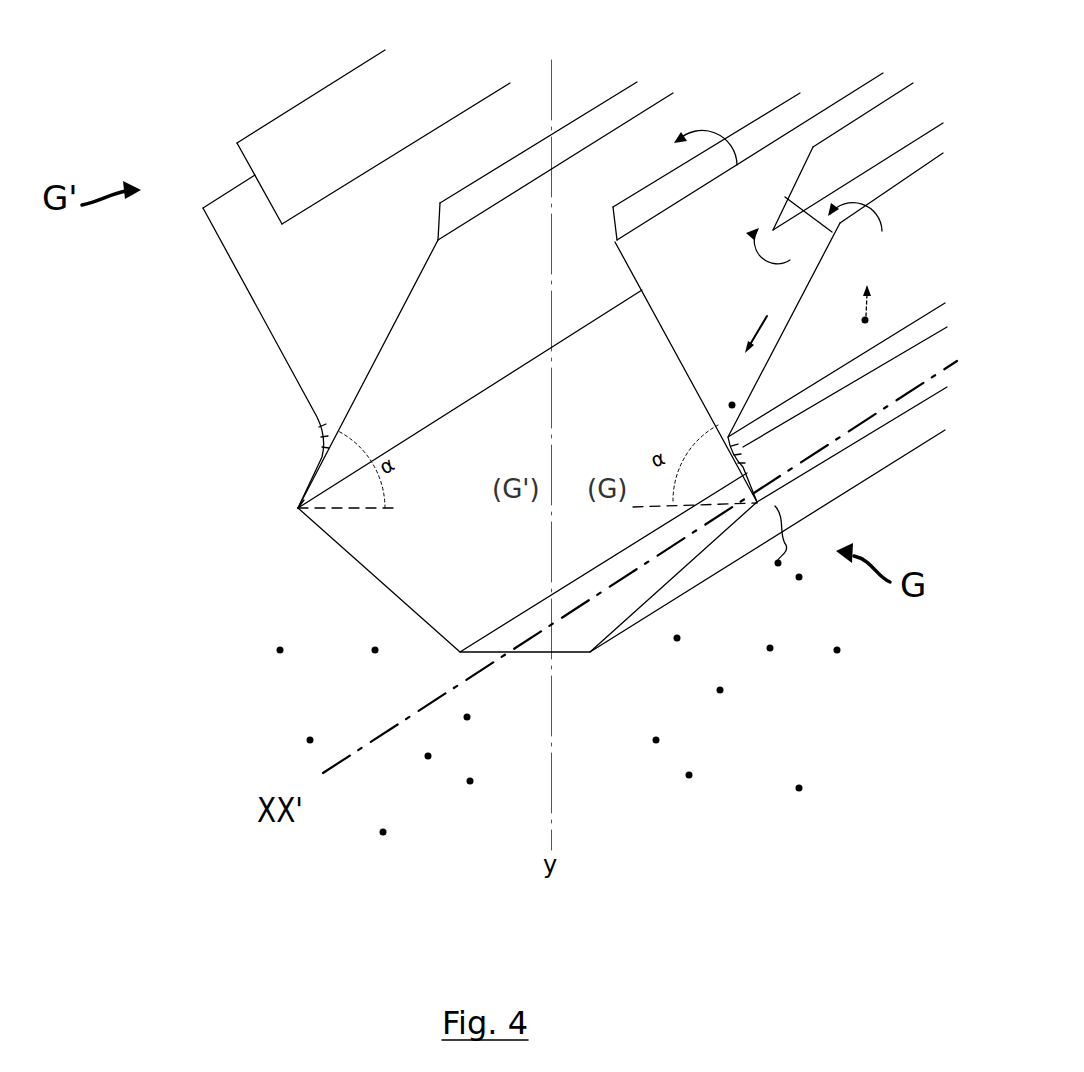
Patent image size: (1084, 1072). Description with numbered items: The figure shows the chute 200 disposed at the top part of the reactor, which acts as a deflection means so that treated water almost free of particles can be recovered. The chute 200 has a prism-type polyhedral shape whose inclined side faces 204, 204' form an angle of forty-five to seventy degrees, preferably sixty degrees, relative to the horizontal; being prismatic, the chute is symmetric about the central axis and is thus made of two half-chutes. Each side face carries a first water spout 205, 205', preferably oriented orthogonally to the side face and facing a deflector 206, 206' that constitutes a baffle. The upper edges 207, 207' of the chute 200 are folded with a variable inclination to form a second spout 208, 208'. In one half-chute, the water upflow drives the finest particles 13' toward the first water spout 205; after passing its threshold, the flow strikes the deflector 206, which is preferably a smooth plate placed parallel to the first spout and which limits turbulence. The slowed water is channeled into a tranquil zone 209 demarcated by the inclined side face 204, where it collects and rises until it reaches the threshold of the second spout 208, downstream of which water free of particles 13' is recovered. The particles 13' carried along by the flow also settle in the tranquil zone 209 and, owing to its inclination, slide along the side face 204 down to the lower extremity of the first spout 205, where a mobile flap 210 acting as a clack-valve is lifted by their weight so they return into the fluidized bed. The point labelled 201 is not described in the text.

The chute 200 is at (576, 394).
The cutting tip 201 is at (296, 507).
The side face 204 is at (686, 372).
The side face 204' is at (368, 374).
The first water spout 205 is at (835, 327).
The first water spout 205' is at (258, 341).
The deflector 206 is at (829, 173).
The deflector 206' is at (373, 124).
The upper edge 207 is at (750, 171).
The upper edge 207' is at (555, 193).
The second spout 208 is at (706, 166).
The second spout 208' is at (537, 161).
The tranquil zone 209 is at (705, 382).
The mobile flap 210 is at (818, 392).
The particles 13' is at (610, 595).